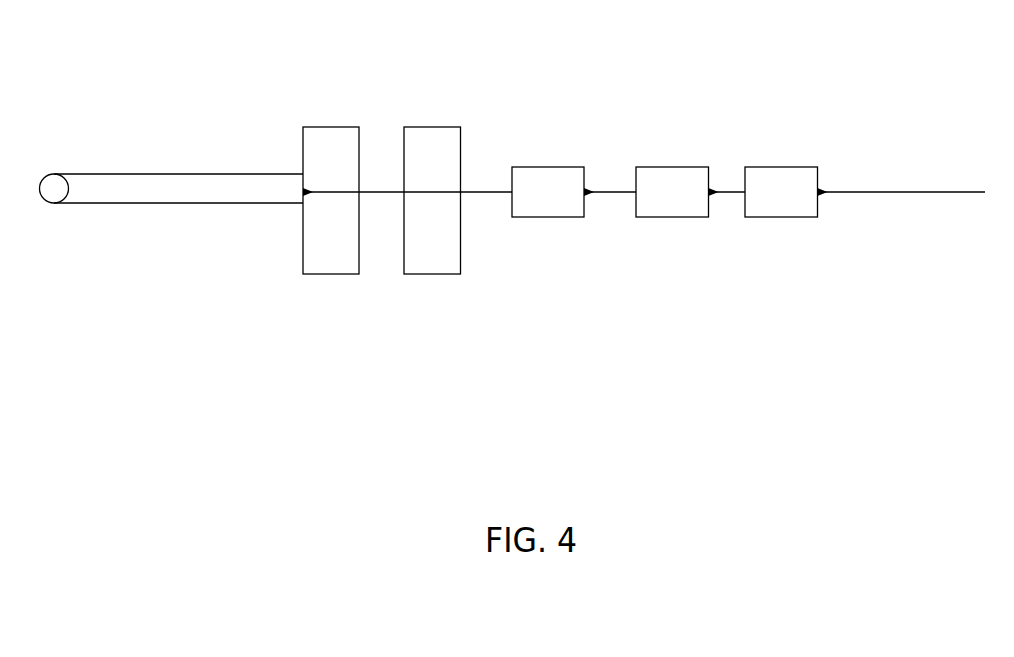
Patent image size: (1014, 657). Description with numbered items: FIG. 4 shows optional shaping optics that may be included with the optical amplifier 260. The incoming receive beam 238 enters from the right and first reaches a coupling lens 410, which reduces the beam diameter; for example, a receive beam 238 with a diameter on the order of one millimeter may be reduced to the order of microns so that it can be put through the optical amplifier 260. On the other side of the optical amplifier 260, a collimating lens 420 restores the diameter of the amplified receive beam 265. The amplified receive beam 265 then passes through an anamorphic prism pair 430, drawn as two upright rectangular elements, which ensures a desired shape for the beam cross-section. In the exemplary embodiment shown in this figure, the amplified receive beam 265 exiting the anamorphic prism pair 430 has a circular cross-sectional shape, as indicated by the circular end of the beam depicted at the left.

The amplified receive beam 265 is at (163, 174).
The anamorphic prism pair 430 is at (429, 126).
The collimating lens 420 is at (548, 192).
The optical amplifier 260 is at (672, 192).
The coupling lens 410 is at (781, 192).
The receive beam 238 is at (875, 192).